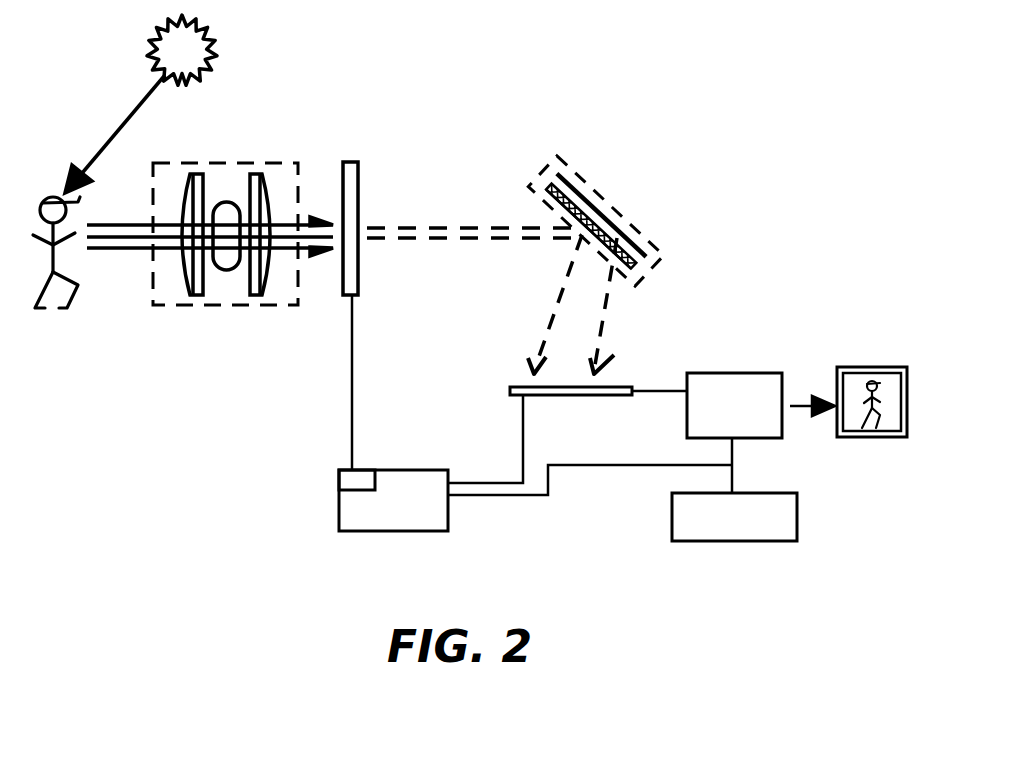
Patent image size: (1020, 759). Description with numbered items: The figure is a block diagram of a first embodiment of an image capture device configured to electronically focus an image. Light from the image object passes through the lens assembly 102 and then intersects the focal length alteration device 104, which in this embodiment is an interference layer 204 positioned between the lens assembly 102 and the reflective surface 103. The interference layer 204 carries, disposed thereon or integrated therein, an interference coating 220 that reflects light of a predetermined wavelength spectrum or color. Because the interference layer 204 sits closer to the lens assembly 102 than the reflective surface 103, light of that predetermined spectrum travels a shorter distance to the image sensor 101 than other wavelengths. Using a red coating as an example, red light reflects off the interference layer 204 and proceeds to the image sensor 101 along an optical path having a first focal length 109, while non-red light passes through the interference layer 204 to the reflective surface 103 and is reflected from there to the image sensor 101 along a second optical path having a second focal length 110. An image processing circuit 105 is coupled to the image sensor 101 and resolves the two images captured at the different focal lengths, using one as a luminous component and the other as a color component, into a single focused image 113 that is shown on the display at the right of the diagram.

The image sensor 101 is at (567, 397).
The lens assembly 102 is at (227, 306).
The reflective surface 103 is at (572, 183).
The focal length alteration device 104 is at (633, 283).
The image processing circuit 105 is at (727, 370).
The first focal length 109 is at (550, 335).
The second focal length 110 is at (606, 308).
The focused image 113 is at (860, 363).
The interference layer 204 is at (549, 183).
The interference coating 220 is at (555, 204).